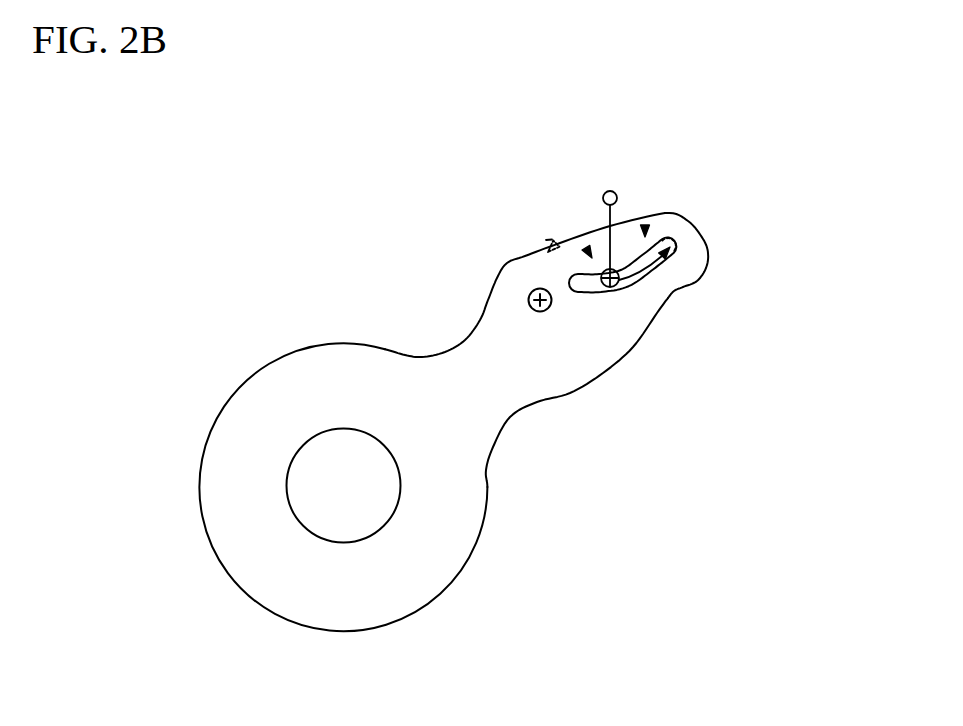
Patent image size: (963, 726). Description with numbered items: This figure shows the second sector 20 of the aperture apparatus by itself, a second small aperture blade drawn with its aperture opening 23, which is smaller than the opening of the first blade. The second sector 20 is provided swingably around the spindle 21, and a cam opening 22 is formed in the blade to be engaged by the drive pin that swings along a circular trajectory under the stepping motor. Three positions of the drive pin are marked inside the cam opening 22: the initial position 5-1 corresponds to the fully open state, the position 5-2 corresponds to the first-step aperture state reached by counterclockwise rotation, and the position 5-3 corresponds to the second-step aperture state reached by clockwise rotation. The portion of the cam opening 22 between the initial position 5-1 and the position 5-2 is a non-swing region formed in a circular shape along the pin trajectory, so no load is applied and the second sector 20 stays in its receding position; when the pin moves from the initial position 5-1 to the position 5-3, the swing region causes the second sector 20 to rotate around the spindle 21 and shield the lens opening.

The second sector 20 is at (227, 462).
The spindle 21 is at (531, 294).
The cam opening 22 is at (707, 264).
The aperture opening 23 is at (388, 483).
The initial position 5-1 is at (613, 281).
The position 5-2 is at (614, 276).
The position 5-3 is at (545, 245).